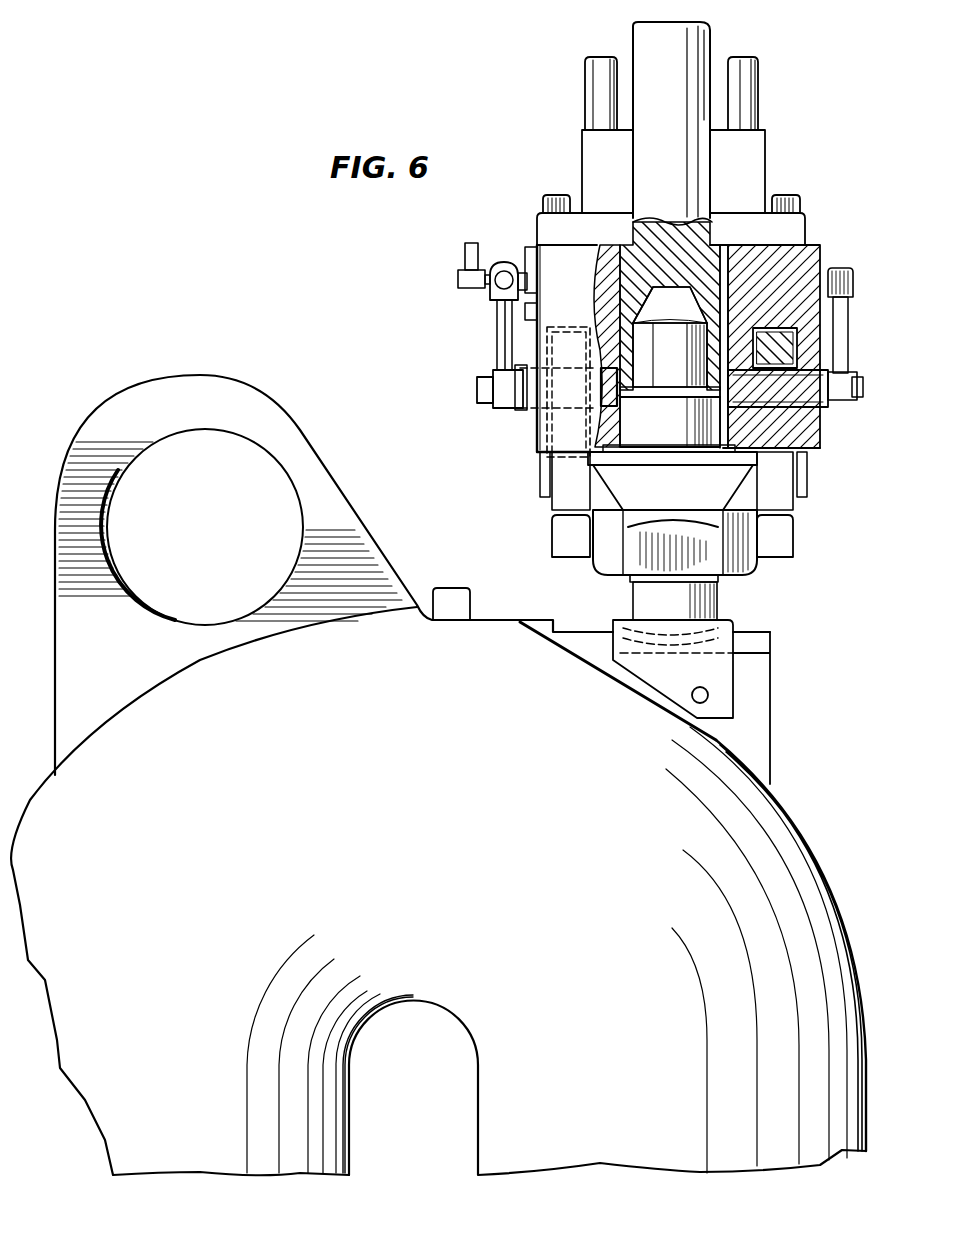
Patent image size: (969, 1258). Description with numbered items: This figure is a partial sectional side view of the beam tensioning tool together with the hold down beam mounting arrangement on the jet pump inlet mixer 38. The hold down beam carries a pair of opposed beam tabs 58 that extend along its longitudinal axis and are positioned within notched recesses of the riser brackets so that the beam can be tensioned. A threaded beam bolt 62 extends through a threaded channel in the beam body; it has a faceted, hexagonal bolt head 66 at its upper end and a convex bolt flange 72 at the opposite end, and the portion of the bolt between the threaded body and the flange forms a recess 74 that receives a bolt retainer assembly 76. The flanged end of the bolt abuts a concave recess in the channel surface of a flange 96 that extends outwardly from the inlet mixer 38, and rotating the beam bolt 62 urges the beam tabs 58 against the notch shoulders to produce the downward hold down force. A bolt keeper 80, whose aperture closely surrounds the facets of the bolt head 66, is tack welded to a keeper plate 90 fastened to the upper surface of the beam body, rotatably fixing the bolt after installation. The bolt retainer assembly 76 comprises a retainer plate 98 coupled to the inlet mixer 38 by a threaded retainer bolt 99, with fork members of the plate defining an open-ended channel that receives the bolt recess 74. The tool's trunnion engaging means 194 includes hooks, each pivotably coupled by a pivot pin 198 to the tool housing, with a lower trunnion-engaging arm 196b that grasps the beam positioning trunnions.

The inlet mixer 38 is at (404, 846).
The beam tabs 58 is at (720, 555).
The beam bolt 62 is at (667, 297).
The bolt head 66 is at (660, 345).
The bolt flange 72 is at (762, 632).
The recess 74 is at (713, 600).
The bolt retainer assembly 76 is at (604, 645).
The bolt keeper 80 is at (653, 432).
The keeper plate 90 is at (745, 458).
The flange 96 is at (760, 758).
The retainer plate 98 is at (723, 672).
The retainer bolt 99 is at (708, 696).
The trunnion engaging means 194 is at (452, 272).
The lower trunnion-engaging arm 196b is at (785, 527).
The pivot pin 198 is at (477, 387).